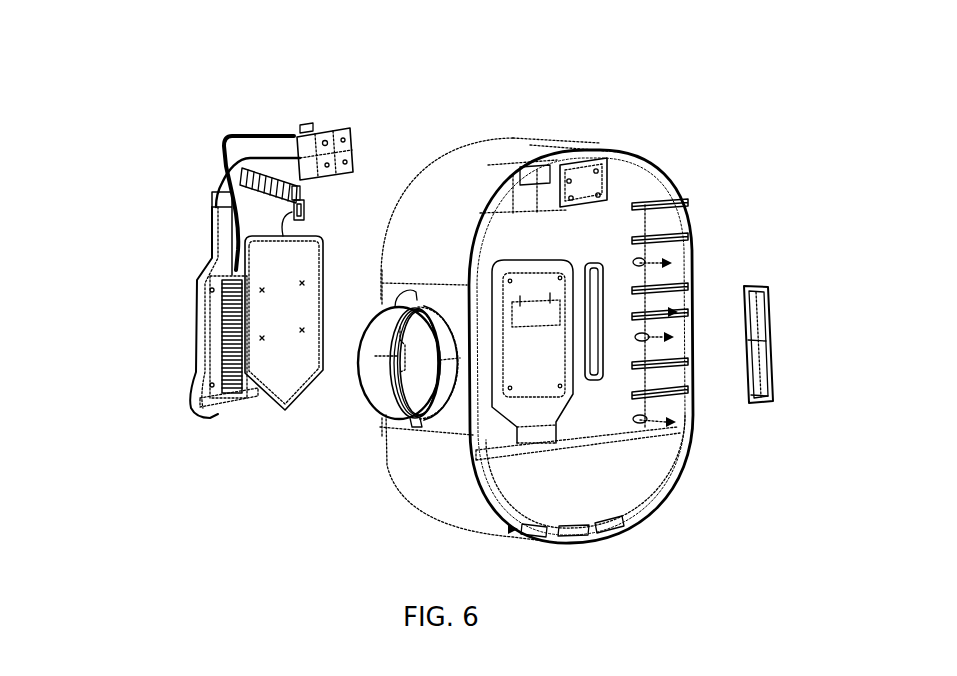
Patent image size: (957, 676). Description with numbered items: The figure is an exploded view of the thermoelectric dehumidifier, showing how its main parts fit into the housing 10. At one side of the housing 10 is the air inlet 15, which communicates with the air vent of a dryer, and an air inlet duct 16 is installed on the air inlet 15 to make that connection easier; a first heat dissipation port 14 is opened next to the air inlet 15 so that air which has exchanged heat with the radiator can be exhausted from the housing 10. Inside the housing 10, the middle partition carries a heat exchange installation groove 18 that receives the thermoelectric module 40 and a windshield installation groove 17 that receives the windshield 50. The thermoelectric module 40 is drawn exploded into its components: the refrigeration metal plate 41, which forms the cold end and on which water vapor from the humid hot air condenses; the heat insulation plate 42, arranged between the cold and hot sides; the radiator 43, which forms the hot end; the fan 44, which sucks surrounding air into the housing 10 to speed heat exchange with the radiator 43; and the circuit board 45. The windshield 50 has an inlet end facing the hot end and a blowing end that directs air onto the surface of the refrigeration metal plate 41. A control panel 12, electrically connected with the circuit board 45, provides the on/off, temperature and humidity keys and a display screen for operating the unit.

The housing 10 is at (488, 160).
The control panel 12 is at (333, 127).
The first heat dissipation port 14 is at (380, 364).
The air inlet 15 is at (418, 381).
The air inlet duct 16 is at (375, 393).
The windshield installation groove 17 is at (600, 291).
The heat exchange installation groove 18 is at (547, 366).
The thermoelectric module 40 is at (150, 193).
The refrigeration metal plate 41 is at (276, 356).
The heat insulation plate 42 is at (232, 412).
The radiator 43 is at (192, 322).
The fan 44 is at (200, 295).
The circuit board 45 is at (290, 150).
The windshield 50 is at (770, 328).